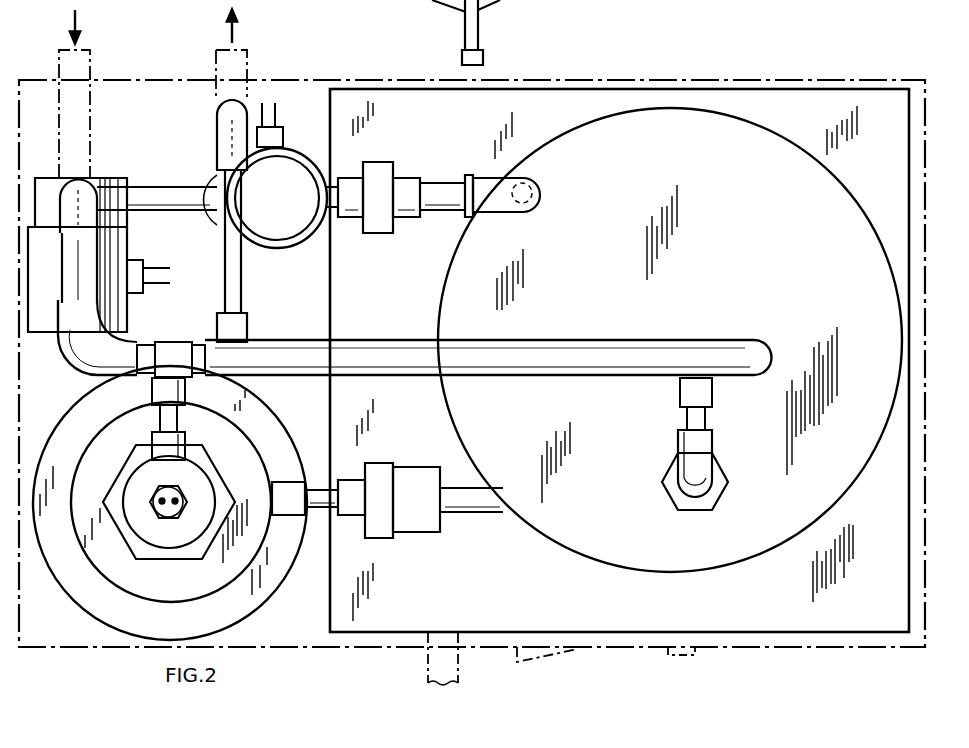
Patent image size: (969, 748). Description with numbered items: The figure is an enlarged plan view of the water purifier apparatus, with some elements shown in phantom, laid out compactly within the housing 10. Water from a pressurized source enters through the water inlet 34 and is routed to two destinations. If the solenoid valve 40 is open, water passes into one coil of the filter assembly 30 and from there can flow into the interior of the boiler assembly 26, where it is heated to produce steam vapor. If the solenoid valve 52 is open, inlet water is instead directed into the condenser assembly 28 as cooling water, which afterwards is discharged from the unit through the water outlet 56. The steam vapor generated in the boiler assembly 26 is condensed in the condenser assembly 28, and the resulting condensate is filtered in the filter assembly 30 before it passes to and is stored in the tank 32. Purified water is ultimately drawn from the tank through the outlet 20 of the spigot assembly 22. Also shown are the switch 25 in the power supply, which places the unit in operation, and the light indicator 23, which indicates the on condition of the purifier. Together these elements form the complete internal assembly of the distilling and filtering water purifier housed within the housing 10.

The housing 10 is at (841, 80).
The outlet 20 is at (675, 0).
The spigot assembly 22 is at (427, 658).
The light indicator 23 is at (685, 655).
The switch 25 is at (573, 655).
The boiler assembly 26 is at (270, 597).
The condenser assembly 28 is at (373, 341).
The filter assembly 30 is at (558, 543).
The tank 32 is at (772, 84).
The water inlet 34 is at (97, 53).
The solenoid valve 40 is at (277, 244).
The solenoid valve 52 is at (42, 331).
The water outlet 56 is at (251, 58).